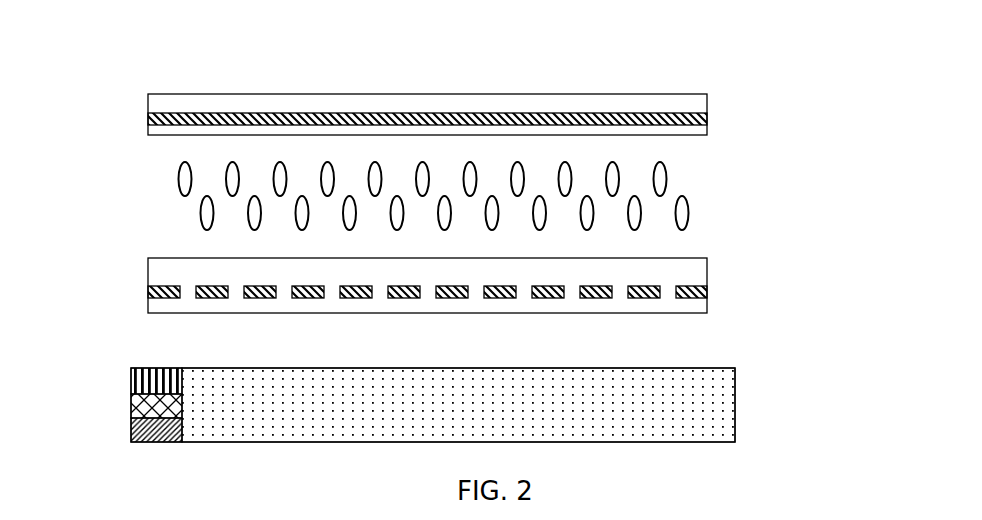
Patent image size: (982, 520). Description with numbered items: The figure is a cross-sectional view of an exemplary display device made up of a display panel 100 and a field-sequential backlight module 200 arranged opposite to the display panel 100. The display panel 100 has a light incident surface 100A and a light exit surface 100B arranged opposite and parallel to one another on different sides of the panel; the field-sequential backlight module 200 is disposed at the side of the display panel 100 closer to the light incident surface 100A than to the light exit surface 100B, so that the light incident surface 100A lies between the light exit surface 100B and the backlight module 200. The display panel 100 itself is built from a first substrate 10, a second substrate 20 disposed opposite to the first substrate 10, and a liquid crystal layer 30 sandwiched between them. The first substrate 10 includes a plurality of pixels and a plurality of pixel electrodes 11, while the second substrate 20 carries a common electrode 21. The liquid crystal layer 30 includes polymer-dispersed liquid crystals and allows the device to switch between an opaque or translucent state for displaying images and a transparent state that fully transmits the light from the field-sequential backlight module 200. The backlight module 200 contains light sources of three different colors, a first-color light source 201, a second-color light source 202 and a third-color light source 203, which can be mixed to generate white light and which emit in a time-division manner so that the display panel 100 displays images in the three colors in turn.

The display panel 100 is at (508, 203).
The light incident surface 100A is at (210, 314).
The light exit surface 100B is at (197, 93).
The first substrate 10 is at (460, 304).
The pixel electrodes 11 is at (702, 293).
The second substrate 20 is at (467, 97).
The common electrode 21 is at (700, 120).
The liquid crystal layer 30 is at (690, 202).
The field-sequential backlight module 200 is at (443, 400).
The first-color light source 201 is at (131, 370).
The second-color light source 202 is at (131, 400).
The third-color light source 203 is at (131, 427).